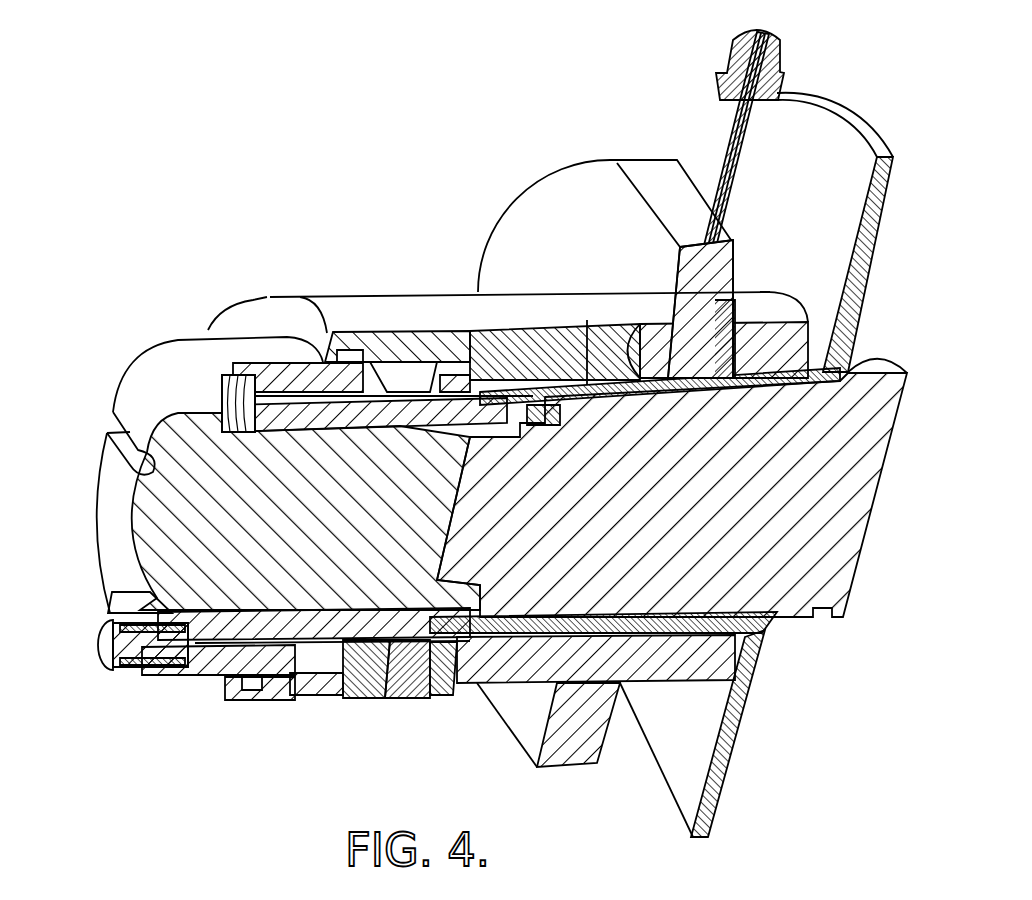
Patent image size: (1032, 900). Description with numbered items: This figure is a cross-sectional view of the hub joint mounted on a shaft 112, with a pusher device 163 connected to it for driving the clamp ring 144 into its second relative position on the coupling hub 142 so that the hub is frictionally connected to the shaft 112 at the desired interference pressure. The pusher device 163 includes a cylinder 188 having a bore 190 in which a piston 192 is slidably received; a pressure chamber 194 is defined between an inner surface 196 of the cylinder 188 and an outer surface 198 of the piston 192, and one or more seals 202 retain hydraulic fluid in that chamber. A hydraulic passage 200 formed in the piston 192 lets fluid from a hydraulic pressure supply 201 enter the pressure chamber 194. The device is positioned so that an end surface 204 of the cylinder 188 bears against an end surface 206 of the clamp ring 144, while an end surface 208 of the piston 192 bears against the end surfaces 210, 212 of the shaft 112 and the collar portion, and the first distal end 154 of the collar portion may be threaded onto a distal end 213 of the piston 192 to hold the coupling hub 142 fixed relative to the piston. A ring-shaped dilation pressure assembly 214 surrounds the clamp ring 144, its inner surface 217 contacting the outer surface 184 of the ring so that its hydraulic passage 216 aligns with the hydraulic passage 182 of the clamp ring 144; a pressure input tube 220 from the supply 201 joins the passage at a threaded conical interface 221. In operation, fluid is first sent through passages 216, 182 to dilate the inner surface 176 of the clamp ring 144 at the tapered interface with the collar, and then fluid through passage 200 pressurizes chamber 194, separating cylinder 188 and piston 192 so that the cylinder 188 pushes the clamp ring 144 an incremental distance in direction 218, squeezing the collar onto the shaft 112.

The shaft 112 is at (845, 537).
The coupling hub 142 is at (850, 328).
The clamp ring 144 is at (800, 287).
The first distal end 154 is at (445, 690).
The pusher device 163 is at (327, 292).
The inner surface 176 is at (740, 390).
The hydraulic passage 182 is at (637, 320).
The outer surface 184 is at (553, 300).
The cylinder 188 is at (423, 310).
The bore 190 is at (395, 375).
The piston 192 is at (230, 343).
The pressure chamber 194 is at (417, 360).
The inner surface 196 is at (307, 660).
The outer surface 198 is at (340, 650).
The hydraulic passage 200 is at (205, 680).
The hydraulic pressure supply 201 is at (770, 62).
The seals 202 is at (233, 347).
The end surface 204 is at (587, 320).
The end surface 206 is at (550, 300).
The end surface 208 is at (527, 417).
The end surface 210 is at (463, 597).
The end surface 212 is at (407, 600).
The distal end 213 is at (475, 688).
The dilation pressure assembly 214 is at (652, 170).
The hydraulic passage 216 is at (748, 248).
The inner surface 217 is at (653, 275).
The direction 218 is at (300, 803).
The pressure input tube 220 is at (752, 170).
The threaded conical interface 221 is at (700, 330).